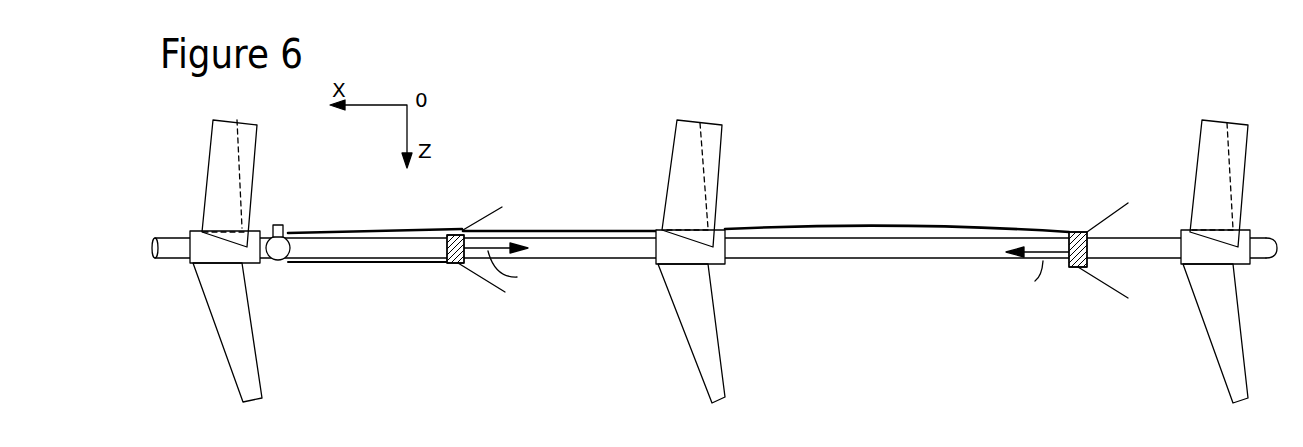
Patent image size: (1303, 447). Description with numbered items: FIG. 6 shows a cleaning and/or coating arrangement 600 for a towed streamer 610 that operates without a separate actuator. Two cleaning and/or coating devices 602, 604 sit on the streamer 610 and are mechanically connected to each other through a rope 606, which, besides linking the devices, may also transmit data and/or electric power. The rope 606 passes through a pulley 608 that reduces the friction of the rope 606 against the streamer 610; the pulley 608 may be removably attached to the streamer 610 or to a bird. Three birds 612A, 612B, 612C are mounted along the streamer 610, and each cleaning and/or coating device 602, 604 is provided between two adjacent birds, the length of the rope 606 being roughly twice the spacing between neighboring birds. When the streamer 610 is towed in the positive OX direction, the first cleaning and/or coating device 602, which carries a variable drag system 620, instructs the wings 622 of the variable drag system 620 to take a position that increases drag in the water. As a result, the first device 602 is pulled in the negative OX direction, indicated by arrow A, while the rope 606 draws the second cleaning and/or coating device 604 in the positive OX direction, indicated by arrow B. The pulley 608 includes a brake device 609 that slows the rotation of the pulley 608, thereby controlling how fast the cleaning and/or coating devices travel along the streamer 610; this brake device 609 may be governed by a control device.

The blade pitch adjustment system 600 is at (747, 93).
The cleaning and/or coating device 602 is at (448, 264).
The cleaning and/or coating device 604 is at (1077, 268).
The rope 606 is at (352, 264).
The pulley 608 is at (281, 277).
The brake device 609 is at (277, 223).
The streamer 610 is at (573, 253).
The bird 612A is at (186, 163).
The bird 612B is at (740, 139).
The bird 612C is at (1192, 162).
The variable drag system 620 is at (470, 210).
The wings 622 is at (501, 206).